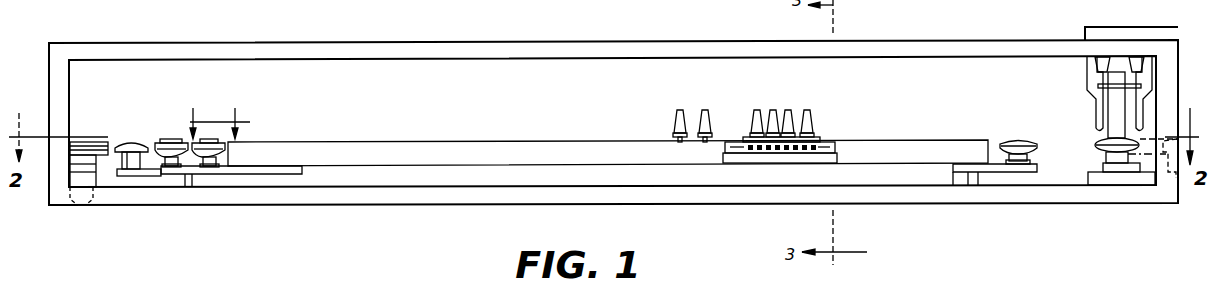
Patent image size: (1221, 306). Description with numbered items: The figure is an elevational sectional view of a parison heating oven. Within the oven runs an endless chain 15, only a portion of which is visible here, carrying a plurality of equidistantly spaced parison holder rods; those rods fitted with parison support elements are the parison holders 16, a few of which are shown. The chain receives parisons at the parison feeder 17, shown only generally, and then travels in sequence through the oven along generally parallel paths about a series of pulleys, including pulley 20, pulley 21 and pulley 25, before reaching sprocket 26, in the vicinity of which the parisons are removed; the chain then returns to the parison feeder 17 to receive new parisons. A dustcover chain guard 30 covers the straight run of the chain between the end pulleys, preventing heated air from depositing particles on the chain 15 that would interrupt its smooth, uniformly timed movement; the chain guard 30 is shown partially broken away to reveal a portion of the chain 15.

The endless chain 15 is at (835, 143).
The parison holders 16 is at (680, 110).
The parison feeder 17 is at (1152, 78).
The pulley 20 is at (213, 143).
The pulley 21 is at (1017, 140).
The pulley 25 is at (190, 143).
The sprocket 26 is at (88, 143).
The chain guard 30 is at (900, 150).